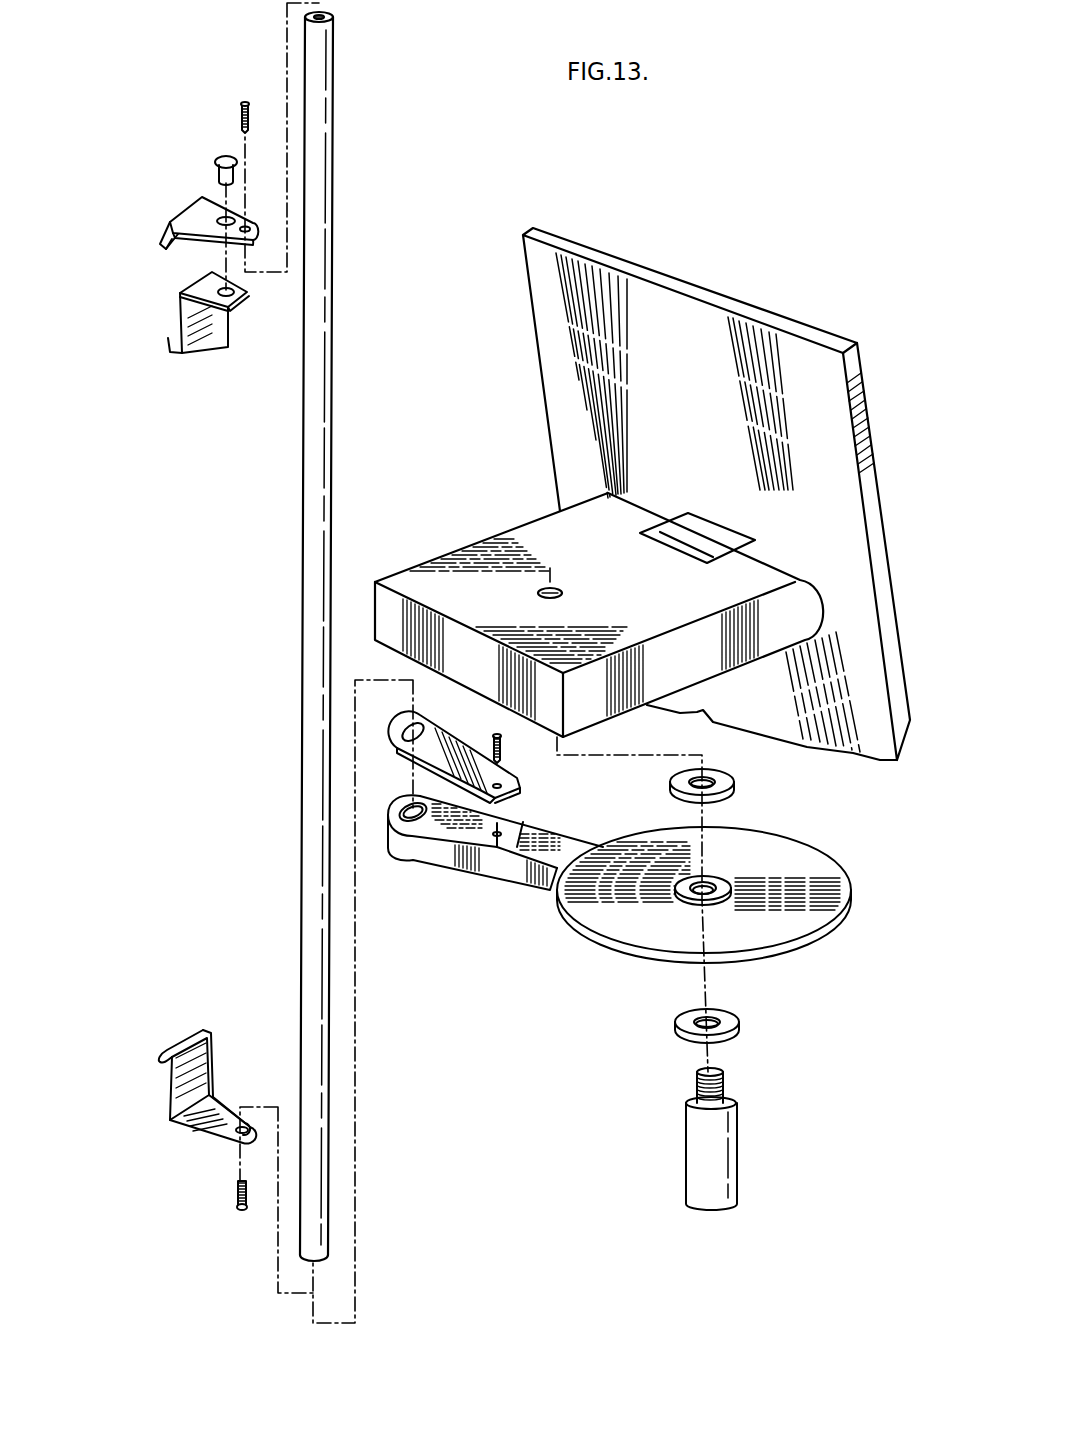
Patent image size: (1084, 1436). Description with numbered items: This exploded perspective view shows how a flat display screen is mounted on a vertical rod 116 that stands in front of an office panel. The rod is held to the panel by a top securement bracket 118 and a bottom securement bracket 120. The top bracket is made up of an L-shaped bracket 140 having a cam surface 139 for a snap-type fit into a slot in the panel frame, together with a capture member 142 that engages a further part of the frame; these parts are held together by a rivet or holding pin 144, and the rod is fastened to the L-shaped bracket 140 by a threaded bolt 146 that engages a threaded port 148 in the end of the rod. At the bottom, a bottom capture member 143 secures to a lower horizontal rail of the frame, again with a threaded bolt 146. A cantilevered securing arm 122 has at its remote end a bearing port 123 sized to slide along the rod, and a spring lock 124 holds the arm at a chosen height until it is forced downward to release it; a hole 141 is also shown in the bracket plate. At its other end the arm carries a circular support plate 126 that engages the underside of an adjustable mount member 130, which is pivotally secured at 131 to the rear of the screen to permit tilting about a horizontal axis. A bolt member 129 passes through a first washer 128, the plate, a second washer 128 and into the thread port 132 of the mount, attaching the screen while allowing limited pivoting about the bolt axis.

The vertical rod 116 is at (308, 528).
The top securement bracket 118 is at (160, 296).
The bottom securement bracket 120 is at (157, 1085).
The cantilevered securing arm 122 is at (532, 895).
The bearing port 123 is at (407, 817).
The spring lock 124 is at (450, 752).
The circular support plate 126 is at (622, 925).
The washer 128 is at (733, 780).
The bolt member 129 is at (697, 1132).
The adjustable mount member 130 is at (599, 563).
The pivotal connection 131 is at (683, 500).
The thread port 132 is at (563, 588).
The cam surface 139 is at (162, 238).
The L-shaped bracket 140 is at (186, 250).
The hole 141 is at (250, 240).
The capture member 142 is at (198, 333).
The bottom capture member 143 is at (210, 1057).
The rivet or holding pin 144 is at (223, 155).
The threaded bolt 146 is at (240, 115).
The threaded port 148 is at (323, 15).